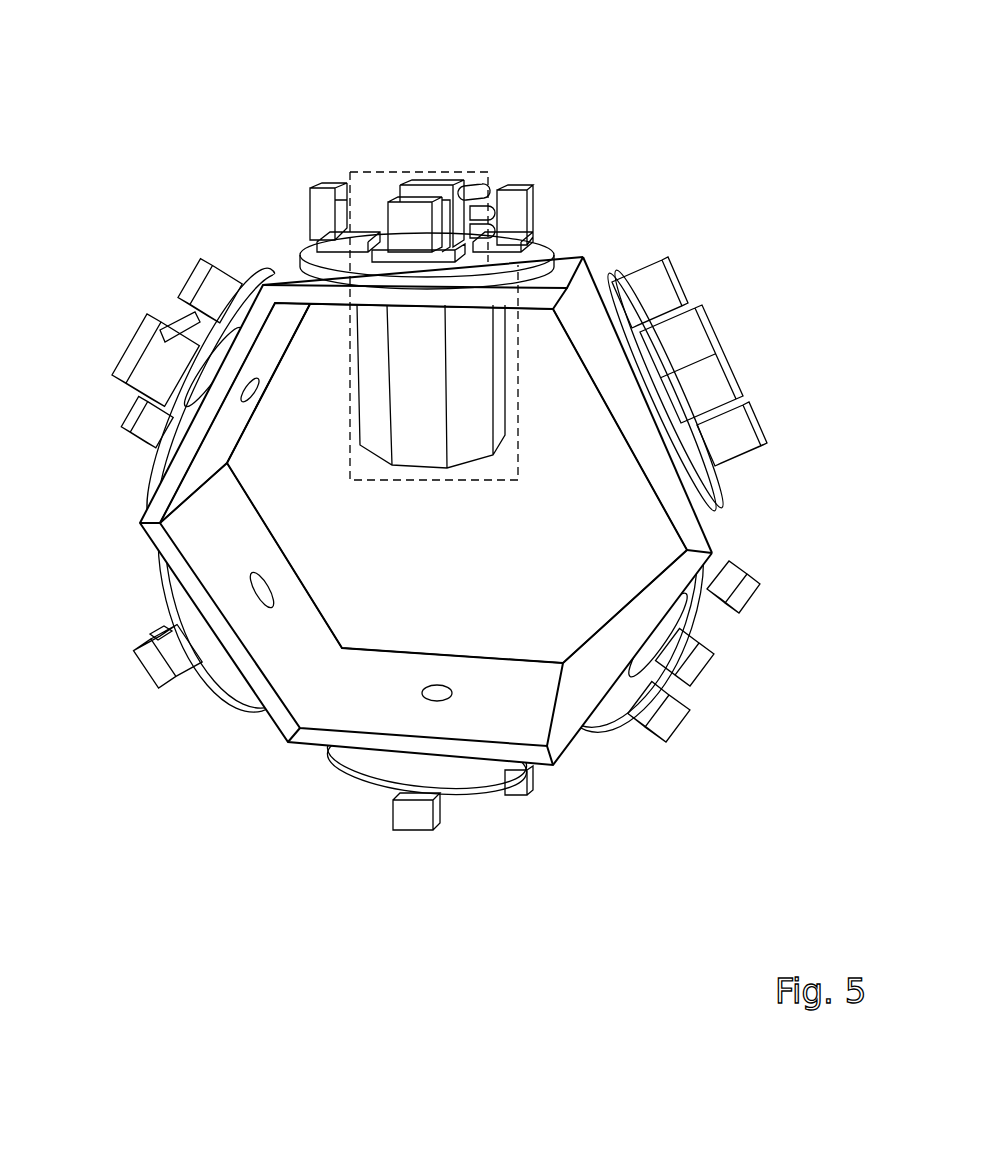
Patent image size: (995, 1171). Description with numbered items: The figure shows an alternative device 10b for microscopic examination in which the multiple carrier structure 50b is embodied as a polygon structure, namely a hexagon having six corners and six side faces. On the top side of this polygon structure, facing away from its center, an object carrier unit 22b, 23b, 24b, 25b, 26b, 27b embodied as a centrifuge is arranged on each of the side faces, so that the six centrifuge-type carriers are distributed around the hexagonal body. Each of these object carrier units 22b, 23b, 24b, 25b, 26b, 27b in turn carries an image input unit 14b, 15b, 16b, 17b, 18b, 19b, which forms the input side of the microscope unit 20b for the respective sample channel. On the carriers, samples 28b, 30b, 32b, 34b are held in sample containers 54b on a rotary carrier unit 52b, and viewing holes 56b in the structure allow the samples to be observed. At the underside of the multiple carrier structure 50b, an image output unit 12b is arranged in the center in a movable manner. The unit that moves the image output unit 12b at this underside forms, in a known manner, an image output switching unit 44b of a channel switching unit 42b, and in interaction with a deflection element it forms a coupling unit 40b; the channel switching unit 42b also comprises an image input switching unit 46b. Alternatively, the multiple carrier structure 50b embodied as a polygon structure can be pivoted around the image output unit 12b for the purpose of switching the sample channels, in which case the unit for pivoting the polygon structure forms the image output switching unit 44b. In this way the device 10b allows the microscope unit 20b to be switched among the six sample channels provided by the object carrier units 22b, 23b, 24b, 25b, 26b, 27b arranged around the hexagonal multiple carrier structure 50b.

The device for microscopic examination 10b is at (224, 75).
The image output unit 12b is at (465, 447).
The image input unit 14b is at (476, 220).
The image input unit 15b is at (735, 408).
The image input unit 16b is at (724, 620).
The image input unit 17b is at (460, 810).
The image input unit 18b is at (190, 680).
The image input unit 19b is at (195, 302).
The microscope unit 20b is at (350, 455).
The object carrier unit 22b is at (545, 256).
The object carrier unit 23b is at (720, 492).
The object carrier unit 24b is at (610, 730).
The object carrier unit 25b is at (365, 782).
The object carrier unit 26b is at (165, 612).
The object carrier unit 27b is at (262, 272).
The sample 28b is at (515, 200).
The sample 30b is at (400, 215).
The sample 32b is at (330, 205).
The sample 34b is at (441, 188).
The coupling unit 40b is at (494, 418).
The channel switching unit 42b is at (494, 418).
The image output switching unit 44b is at (533, 347).
The image input switching unit 46b is at (476, 257).
The multiple carrier structure 50b is at (683, 520).
The rotary carrier unit 52b is at (591, 217).
The sample container 54b is at (397, 159).
The viewing hole 56b is at (246, 397).